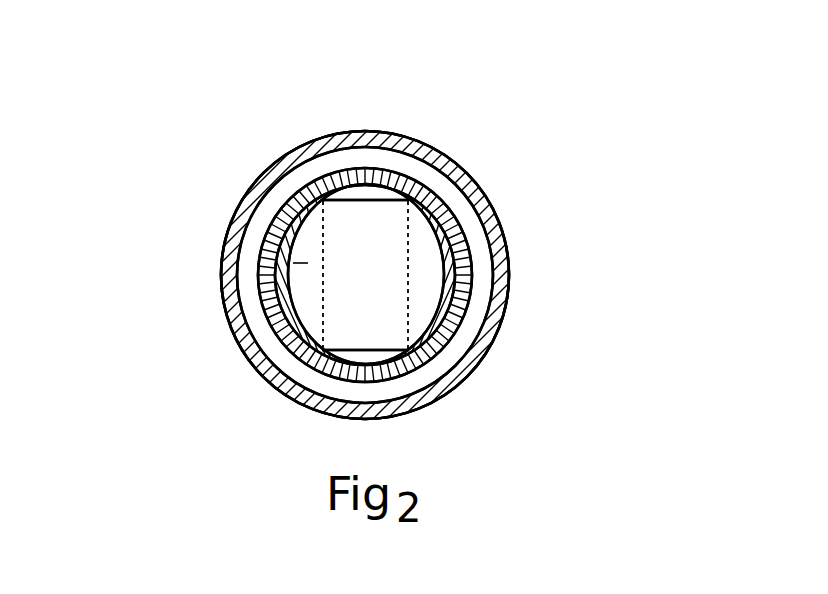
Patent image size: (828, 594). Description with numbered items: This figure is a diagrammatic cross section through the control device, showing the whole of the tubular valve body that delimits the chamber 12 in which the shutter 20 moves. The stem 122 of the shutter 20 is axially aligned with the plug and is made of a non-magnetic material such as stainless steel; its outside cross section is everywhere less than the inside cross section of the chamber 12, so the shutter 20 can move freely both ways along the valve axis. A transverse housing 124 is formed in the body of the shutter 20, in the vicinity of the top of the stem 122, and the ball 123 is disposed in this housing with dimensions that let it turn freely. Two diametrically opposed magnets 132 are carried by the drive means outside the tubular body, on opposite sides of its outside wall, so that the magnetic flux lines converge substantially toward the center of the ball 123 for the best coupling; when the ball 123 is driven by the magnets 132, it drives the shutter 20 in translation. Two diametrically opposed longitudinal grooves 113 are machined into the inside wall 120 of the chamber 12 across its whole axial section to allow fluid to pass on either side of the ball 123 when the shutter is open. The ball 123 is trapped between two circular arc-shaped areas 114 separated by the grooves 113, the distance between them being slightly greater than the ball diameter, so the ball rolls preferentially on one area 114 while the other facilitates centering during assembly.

The chamber 12 is at (410, 343).
The shutter 20 is at (339, 275).
The longitudinal groove 113 is at (370, 200).
The circular arc-shaped area 114 is at (437, 248).
The inside wall 120 is at (457, 302).
The stem 122 is at (273, 363).
The ball 123 is at (252, 237).
The transverse housing 124 is at (320, 203).
The magnet 132 is at (498, 230).